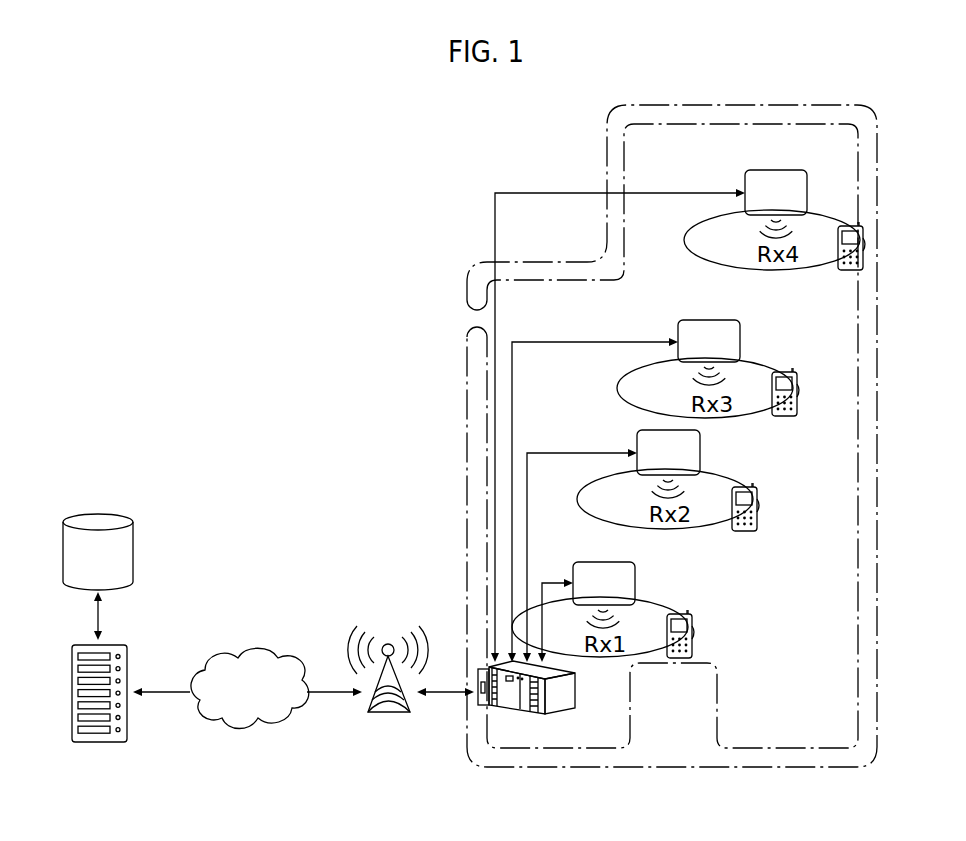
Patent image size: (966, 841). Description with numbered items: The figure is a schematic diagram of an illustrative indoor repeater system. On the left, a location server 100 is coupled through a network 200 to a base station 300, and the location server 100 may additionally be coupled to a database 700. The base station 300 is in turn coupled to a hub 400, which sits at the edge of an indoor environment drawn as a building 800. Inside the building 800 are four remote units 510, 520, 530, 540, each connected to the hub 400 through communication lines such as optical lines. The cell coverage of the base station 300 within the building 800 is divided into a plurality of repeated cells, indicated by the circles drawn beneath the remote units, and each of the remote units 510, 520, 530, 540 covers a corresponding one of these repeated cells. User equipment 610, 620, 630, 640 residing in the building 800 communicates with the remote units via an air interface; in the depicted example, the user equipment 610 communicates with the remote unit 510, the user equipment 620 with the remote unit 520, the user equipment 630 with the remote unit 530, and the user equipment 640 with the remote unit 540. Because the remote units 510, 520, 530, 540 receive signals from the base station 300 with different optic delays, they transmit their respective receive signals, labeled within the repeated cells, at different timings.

The location server 100 is at (98, 745).
The network 200 is at (247, 655).
The base station 300 is at (365, 712).
The hub 400 is at (512, 713).
The remote unit 510 is at (635, 570).
The remote unit 520 is at (700, 440).
The remote unit 530 is at (740, 329).
The remote unit 540 is at (745, 178).
The user equipment 610 is at (692, 642).
The user equipment 620 is at (757, 512).
The user equipment 630 is at (797, 401).
The user equipment 640 is at (863, 256).
The database 700 is at (98, 514).
The building 800 is at (738, 104).